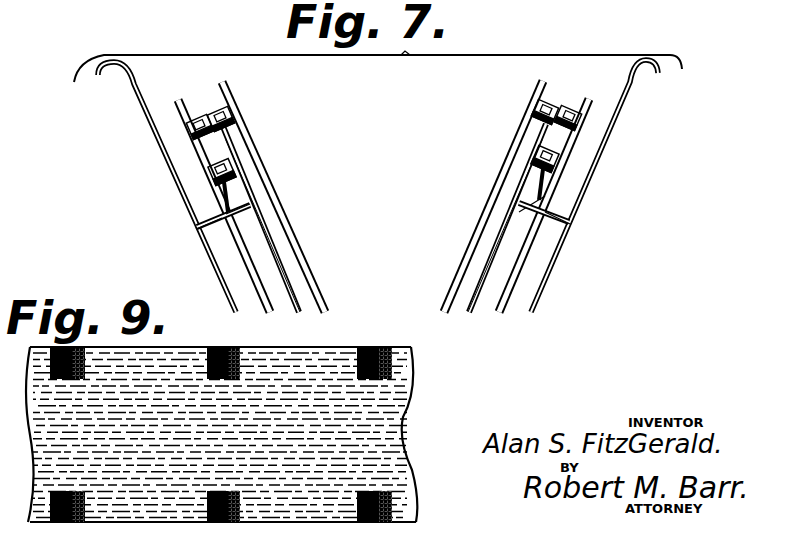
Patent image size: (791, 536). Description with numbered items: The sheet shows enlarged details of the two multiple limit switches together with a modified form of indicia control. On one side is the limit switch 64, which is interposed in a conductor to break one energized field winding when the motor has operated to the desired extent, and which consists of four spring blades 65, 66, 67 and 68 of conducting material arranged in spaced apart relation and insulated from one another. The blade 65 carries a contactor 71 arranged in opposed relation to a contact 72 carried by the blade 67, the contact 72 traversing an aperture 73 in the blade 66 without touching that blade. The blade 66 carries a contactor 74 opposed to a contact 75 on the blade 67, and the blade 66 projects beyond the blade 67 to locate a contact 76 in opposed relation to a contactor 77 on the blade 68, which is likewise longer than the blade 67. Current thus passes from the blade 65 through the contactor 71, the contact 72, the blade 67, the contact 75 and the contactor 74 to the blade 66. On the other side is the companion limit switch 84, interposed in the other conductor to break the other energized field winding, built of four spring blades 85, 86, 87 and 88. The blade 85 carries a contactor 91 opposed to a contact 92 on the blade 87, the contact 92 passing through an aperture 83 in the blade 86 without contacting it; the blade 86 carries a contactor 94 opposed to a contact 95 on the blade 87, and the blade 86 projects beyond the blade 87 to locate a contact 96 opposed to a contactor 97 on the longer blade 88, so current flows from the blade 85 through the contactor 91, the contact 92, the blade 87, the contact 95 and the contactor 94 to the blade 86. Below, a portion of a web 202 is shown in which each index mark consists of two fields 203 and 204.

In FIG. 7, the limit switch 64 is at (565, 243).
In FIG. 7, the spring blade 65 is at (621, 106).
In FIG. 7, the spring blade 66 is at (512, 270).
In FIG. 7, the spring blade 67 is at (483, 260).
In FIG. 7, the spring blade 68 is at (477, 232).
In FIG. 7, the contactor 71 is at (568, 208).
In FIG. 7, the contact 72 is at (517, 200).
In FIG. 7, the aperture 73 is at (530, 176).
In FIG. 7, the contactor 74 is at (556, 157).
In FIG. 7, the contact 75 is at (540, 165).
In FIG. 7, the contact 76 is at (572, 112).
In FIG. 7, the contactor 77 is at (552, 102).
In FIG. 7, the aperture 83 is at (214, 210).
In FIG. 7, the limit switch 84 is at (196, 226).
In FIG. 7, the spring blade 85 is at (211, 257).
In FIG. 7, the spring blade 86 is at (240, 258).
In FIG. 7, the spring blade 87 is at (278, 253).
In FIG. 7, the spring blade 88 is at (258, 182).
In FIG. 7, the contactor 91 is at (203, 226).
In FIG. 7, the contact 92 is at (253, 218).
In FIG. 7, the contactor 94 is at (229, 170).
In FIG. 7, the contact 95 is at (222, 164).
In FIG. 7, the contact 96 is at (196, 122).
In FIG. 7, the contactor 97 is at (218, 122).
In FIG. 9, the web 202 is at (398, 417).
In FIG. 9, the field 203 is at (222, 340).
In FIG. 9, the field 204 is at (241, 345).